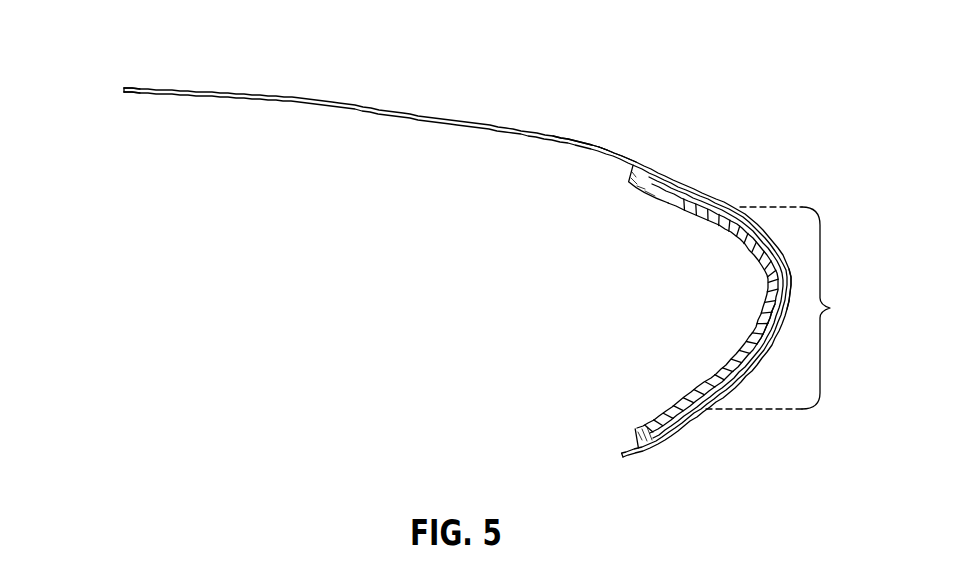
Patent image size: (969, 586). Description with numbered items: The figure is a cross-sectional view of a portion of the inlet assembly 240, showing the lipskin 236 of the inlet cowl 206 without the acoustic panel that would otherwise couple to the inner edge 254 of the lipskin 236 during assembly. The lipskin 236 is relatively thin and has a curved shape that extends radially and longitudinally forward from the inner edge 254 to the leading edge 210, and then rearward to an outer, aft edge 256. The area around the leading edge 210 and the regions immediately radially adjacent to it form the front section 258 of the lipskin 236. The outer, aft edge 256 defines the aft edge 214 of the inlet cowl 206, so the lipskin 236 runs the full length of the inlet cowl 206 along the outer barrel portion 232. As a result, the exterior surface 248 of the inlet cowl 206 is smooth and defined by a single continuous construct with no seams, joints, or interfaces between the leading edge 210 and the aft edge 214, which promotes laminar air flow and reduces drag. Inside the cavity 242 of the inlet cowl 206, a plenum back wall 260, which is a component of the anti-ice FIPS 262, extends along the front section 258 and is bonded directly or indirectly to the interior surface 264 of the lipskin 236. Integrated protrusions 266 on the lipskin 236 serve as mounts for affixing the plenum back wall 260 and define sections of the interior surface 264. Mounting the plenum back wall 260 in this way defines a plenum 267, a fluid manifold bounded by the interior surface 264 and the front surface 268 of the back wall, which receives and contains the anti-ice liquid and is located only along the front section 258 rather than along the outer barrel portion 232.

The inlet cowl 206 is at (373, 107).
The leading edge 210 is at (791, 289).
The aft edge 214 is at (123, 92).
The outer barrel portion 232 is at (291, 96).
The lipskin 236 is at (581, 141).
The inlet assembly 240 is at (527, 84).
The cavity 242 is at (617, 280).
The exterior surface 248 is at (614, 152).
The inner edge 254 is at (625, 455).
The outer, aft edge 256 is at (123, 89).
The front section 258 is at (800, 308).
The plenum back wall 260 is at (752, 345).
The anti-ice FIPS 262 is at (691, 368).
The interior surface 264 is at (782, 284).
The protrusions 266 is at (663, 192).
The plenum 267 is at (776, 340).
The front surface 268 is at (779, 306).